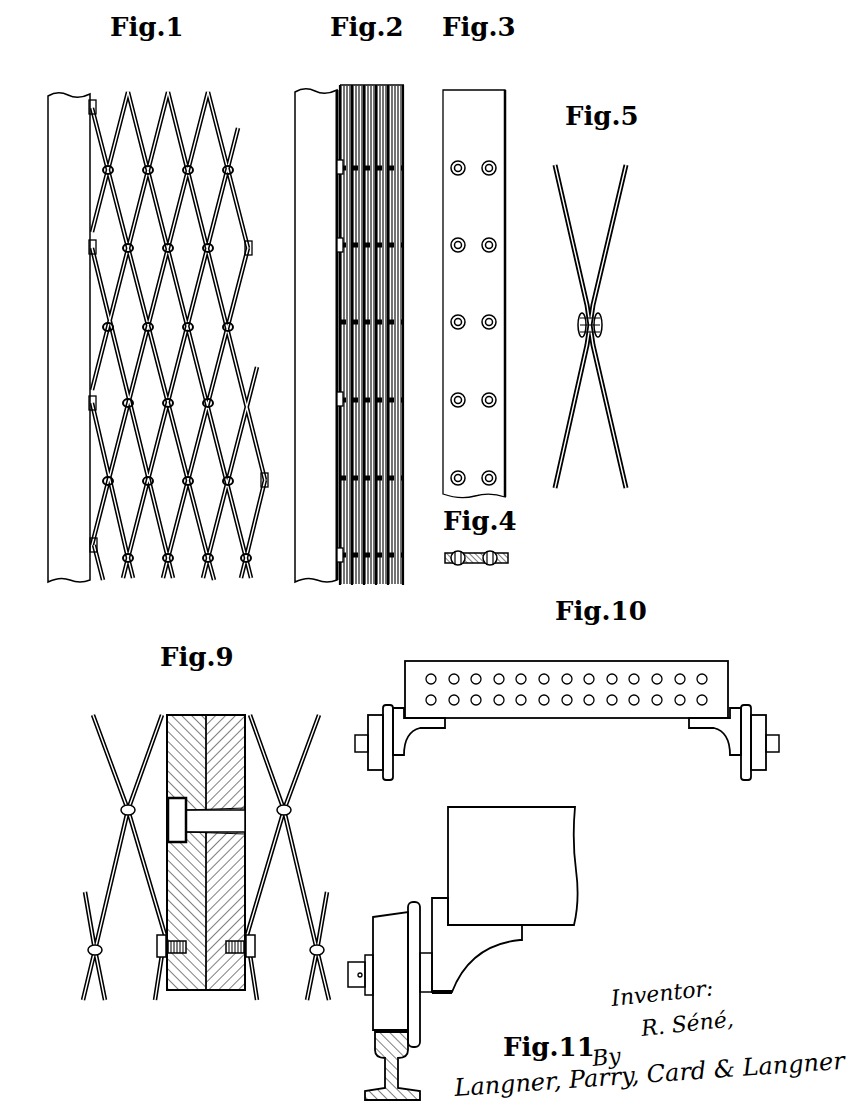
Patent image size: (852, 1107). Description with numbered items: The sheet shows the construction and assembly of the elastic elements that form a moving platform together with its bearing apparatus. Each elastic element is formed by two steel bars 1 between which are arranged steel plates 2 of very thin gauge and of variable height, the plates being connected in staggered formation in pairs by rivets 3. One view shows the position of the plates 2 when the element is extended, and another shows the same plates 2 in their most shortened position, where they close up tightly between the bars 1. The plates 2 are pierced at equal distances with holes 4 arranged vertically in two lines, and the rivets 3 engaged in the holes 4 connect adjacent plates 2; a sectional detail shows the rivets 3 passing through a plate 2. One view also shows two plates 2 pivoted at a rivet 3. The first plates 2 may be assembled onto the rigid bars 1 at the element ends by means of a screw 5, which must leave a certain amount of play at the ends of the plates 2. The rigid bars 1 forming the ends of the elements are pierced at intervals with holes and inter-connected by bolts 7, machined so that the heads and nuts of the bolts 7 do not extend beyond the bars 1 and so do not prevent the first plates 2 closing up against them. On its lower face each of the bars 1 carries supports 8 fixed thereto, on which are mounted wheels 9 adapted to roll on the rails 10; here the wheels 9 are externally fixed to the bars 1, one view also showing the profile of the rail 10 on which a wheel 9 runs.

In FIG. 1, the steel bar 1 is at (50, 184).
In FIG. 2, the steel bar 1 is at (300, 172).
In FIG. 9, the steel bar 1 is at (222, 978).
In FIG. 10, the steel bar 1 is at (677, 664).
In FIG. 11, the steel bar 1 is at (455, 840).
In FIG. 1, the steel plate 2 is at (213, 112).
In FIG. 2, the steel plate 2 is at (405, 148).
In FIG. 3, the steel plate 2 is at (452, 148).
In FIG. 4, the steel plate 2 is at (503, 560).
In FIG. 5, the steel plate 2 is at (612, 223).
In FIG. 9, the steel plate 2 is at (262, 738).
In FIG. 5, the rivet 3 is at (601, 323).
In FIG. 9, the rivet 3 is at (291, 810).
In FIG. 3, the hole 4 is at (487, 176).
In FIG. 4, the hole 4 is at (488, 567).
In FIG. 9, the screw 5 is at (157, 953).
In FIG. 9, the bolt 7 is at (220, 822).
In FIG. 10, the bolt 7 is at (476, 697).
In FIG. 10, the support 8 is at (412, 734).
In FIG. 11, the support 8 is at (470, 957).
In FIG. 10, the wheel 9 is at (375, 760).
In FIG. 11, the wheel 9 is at (383, 926).
In FIG. 11, the rail 10 is at (380, 1043).